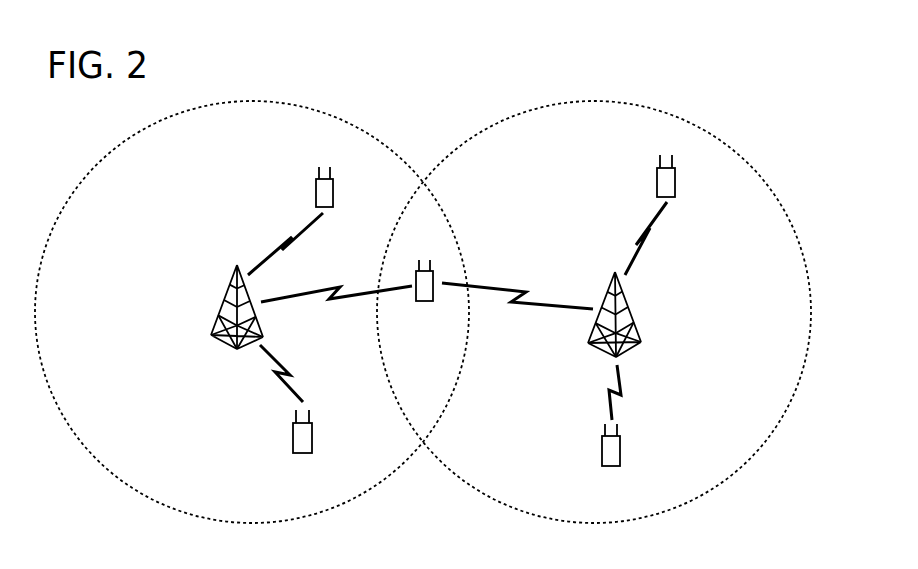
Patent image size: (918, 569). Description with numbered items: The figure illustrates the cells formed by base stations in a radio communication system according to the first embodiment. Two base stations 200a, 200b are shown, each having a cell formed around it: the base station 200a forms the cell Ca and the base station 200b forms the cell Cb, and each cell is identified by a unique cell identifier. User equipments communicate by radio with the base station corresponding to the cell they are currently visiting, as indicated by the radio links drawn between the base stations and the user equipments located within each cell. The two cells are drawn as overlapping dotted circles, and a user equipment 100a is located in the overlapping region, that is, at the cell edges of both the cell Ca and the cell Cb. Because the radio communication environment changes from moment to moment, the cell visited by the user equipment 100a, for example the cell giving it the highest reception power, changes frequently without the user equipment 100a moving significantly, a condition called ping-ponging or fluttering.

The user equipment 100a is at (423, 301).
The base station 200a is at (228, 299).
The base station 200b is at (622, 305).
The cell Ca is at (387, 478).
The cell Cb is at (730, 475).